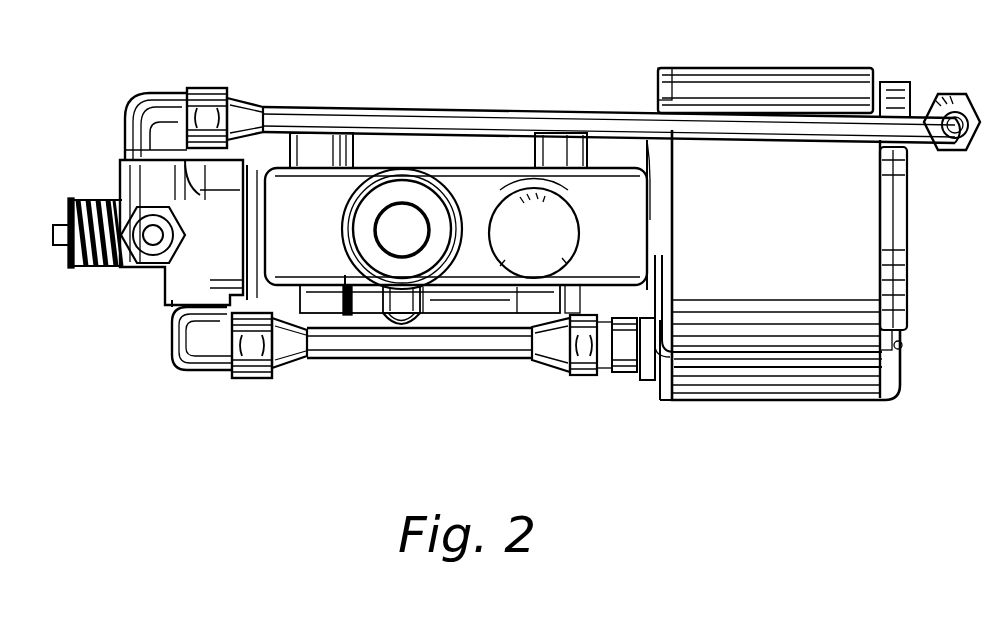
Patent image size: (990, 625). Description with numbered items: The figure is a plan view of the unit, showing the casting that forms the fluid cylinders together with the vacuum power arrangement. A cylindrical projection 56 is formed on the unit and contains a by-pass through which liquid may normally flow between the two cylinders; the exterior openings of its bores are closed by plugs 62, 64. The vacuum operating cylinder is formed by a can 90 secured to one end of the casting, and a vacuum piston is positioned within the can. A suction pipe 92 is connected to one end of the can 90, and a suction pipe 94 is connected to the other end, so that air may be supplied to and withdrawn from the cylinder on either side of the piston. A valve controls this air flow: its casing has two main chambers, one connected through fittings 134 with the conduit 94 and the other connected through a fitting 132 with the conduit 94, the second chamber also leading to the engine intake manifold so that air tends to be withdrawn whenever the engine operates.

The cylindrical projection 56 is at (465, 300).
The plug 62 is at (345, 318).
The plug 64 is at (418, 313).
The can 90 is at (845, 255).
The suction pipe 92 is at (928, 133).
The suction pipe 94 is at (333, 355).
The fitting 132 is at (148, 120).
The fitting 134 is at (198, 350).